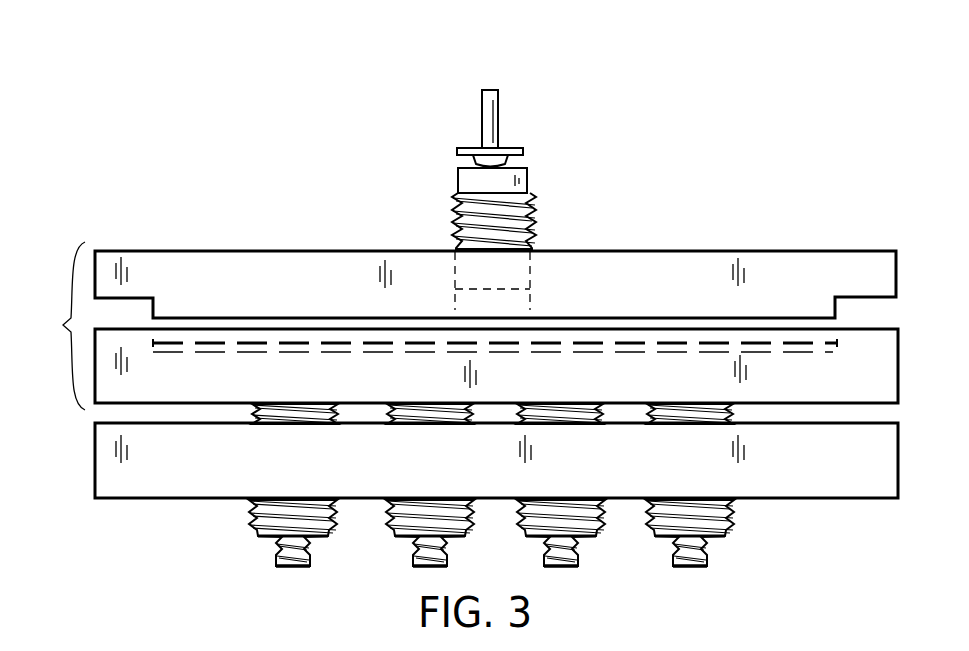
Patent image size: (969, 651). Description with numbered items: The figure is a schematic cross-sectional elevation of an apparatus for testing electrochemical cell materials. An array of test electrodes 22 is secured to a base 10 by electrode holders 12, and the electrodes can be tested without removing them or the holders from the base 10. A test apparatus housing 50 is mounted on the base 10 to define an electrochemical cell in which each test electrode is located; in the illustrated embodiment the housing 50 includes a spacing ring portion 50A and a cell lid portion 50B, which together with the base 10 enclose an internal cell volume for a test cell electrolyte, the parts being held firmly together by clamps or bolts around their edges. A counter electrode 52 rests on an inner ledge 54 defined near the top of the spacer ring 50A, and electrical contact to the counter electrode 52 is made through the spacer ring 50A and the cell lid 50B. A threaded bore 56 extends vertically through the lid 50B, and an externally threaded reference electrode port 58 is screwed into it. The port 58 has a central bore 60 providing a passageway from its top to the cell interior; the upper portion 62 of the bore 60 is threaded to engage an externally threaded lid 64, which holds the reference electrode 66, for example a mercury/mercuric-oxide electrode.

The base 10 is at (823, 473).
The electrode holders 12 is at (725, 537).
The test electrodes 22 is at (692, 568).
The test apparatus housing 50 is at (53, 326).
The spacing ring portion 50A is at (830, 367).
The cell lid portion 50B is at (782, 273).
The counter electrode 52 is at (244, 343).
The inner ledge 54 is at (170, 350).
The threaded bore 56 is at (526, 300).
The reference electrode port 58 is at (533, 198).
The central bore 60 is at (520, 225).
The upper portion of bore 62 is at (527, 162).
The lid 64 is at (460, 148).
The reference electrode 66 is at (502, 115).